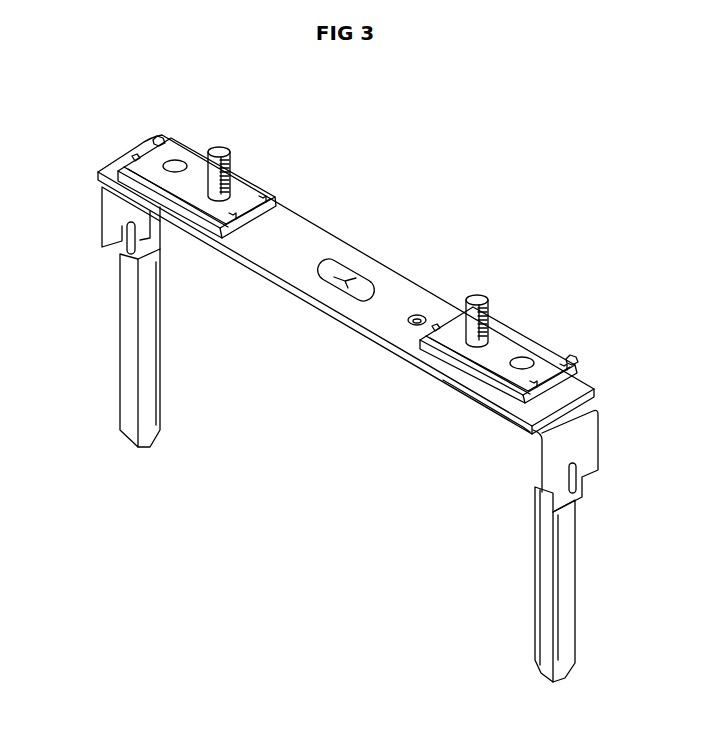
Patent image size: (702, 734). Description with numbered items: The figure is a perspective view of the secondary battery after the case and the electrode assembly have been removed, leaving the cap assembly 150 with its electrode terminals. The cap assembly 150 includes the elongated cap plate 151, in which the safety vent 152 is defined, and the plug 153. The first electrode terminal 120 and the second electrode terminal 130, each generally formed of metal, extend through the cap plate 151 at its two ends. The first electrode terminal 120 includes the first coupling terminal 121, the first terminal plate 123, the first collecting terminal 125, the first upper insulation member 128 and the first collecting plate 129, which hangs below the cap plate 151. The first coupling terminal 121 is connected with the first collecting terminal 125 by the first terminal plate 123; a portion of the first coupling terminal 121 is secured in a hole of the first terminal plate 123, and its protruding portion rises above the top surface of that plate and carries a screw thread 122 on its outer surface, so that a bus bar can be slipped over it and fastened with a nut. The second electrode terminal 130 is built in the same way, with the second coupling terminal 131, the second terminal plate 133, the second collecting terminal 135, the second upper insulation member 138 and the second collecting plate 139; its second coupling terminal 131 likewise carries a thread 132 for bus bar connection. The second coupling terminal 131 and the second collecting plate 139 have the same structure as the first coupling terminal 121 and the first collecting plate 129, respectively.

The first electrode terminal 120 is at (218, 133).
The first coupling terminal 121 is at (224, 150).
The screw thread 122 is at (232, 168).
The first terminal plate 123 is at (143, 142).
The first collecting terminal 125 is at (174, 160).
The first upper insulation member 128 is at (159, 138).
The first collecting plate 129 is at (110, 218).
The second electrode terminal 130 is at (572, 323).
The second coupling terminal 131 is at (472, 293).
The threaded portion of second pin 132 is at (488, 320).
The second terminal plate 133 is at (550, 361).
The second collecting terminal 135 is at (524, 360).
The second upper insulation member 138 is at (567, 367).
The second collecting plate 139 is at (590, 447).
The cap assembly 150 is at (387, 219).
The cap plate 151 is at (306, 228).
The safety vent 152 is at (343, 265).
The plug 153 is at (416, 313).